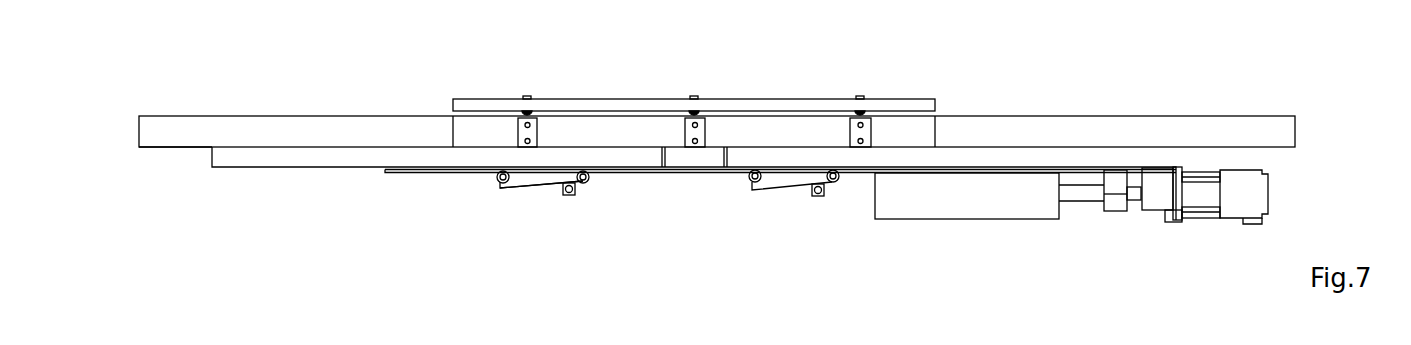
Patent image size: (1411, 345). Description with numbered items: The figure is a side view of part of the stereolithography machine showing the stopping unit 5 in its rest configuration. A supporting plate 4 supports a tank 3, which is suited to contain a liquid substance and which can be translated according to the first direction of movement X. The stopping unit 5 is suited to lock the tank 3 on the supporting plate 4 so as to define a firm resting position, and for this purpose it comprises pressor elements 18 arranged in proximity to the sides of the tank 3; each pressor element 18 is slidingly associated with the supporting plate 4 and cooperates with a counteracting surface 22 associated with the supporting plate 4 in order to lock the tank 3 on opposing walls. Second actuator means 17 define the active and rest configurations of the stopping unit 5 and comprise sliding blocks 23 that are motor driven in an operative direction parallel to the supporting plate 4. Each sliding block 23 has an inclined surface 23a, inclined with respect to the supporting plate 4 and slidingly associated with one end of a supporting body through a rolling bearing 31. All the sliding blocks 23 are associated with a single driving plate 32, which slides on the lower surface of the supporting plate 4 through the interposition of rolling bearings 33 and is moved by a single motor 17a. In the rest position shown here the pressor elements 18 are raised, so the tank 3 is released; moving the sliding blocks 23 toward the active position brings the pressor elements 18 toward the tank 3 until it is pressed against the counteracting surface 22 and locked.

The tank 3 is at (1224, 105).
The supporting plate 4 is at (226, 160).
The stopping unit 5 is at (621, 96).
The second actuator means 17 is at (766, 212).
The motor 17a is at (1254, 212).
The pressor element 18 is at (762, 98).
The counteracting surface 22 is at (270, 149).
The sliding block 23 is at (517, 193).
The inclined surface 23a is at (545, 189).
The rolling bearing 31 is at (573, 193).
The driving plate 32 is at (415, 175).
The rolling bearings 33 is at (498, 184).